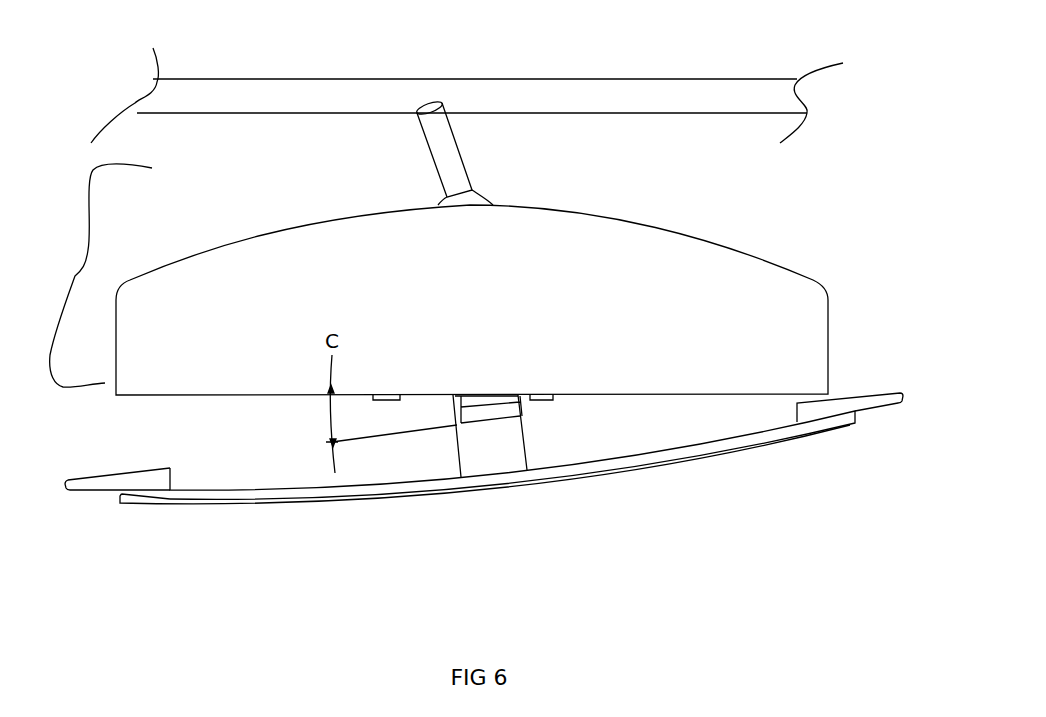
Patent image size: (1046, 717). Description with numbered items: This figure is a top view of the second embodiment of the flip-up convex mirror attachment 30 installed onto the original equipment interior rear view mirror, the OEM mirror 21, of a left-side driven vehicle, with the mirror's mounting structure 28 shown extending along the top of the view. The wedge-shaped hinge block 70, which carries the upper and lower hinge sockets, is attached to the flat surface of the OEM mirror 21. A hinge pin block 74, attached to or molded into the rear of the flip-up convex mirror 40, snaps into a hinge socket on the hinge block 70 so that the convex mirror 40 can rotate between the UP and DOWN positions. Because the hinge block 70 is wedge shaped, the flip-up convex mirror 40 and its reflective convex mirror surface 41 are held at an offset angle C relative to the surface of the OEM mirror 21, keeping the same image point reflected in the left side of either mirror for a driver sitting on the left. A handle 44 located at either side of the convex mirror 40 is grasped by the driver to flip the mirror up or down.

The OEM mirror 21 is at (75, 276).
The rail 28 is at (612, 93).
The flip-up convex mirror attachment 30 is at (668, 190).
The flip-up convex mirror 40 is at (403, 485).
The reflective convex mirror surface 41 is at (350, 497).
The handle 44 is at (880, 408).
The hinge block 70 is at (520, 413).
The hinge pin block 74 is at (507, 442).